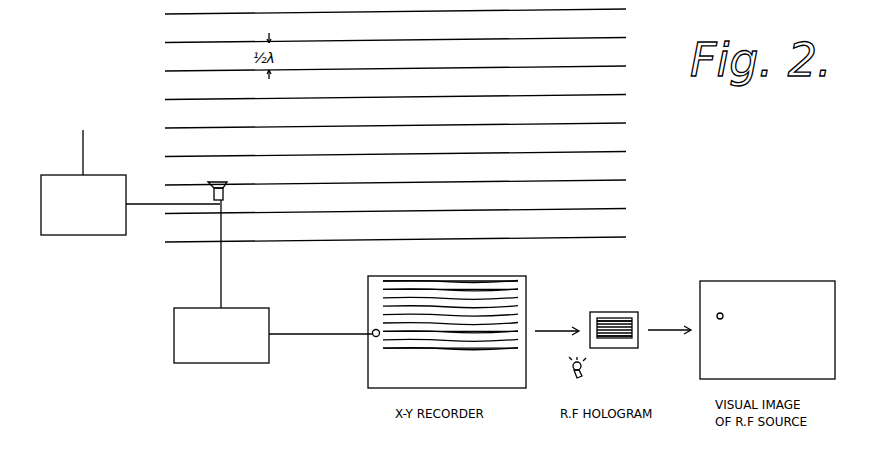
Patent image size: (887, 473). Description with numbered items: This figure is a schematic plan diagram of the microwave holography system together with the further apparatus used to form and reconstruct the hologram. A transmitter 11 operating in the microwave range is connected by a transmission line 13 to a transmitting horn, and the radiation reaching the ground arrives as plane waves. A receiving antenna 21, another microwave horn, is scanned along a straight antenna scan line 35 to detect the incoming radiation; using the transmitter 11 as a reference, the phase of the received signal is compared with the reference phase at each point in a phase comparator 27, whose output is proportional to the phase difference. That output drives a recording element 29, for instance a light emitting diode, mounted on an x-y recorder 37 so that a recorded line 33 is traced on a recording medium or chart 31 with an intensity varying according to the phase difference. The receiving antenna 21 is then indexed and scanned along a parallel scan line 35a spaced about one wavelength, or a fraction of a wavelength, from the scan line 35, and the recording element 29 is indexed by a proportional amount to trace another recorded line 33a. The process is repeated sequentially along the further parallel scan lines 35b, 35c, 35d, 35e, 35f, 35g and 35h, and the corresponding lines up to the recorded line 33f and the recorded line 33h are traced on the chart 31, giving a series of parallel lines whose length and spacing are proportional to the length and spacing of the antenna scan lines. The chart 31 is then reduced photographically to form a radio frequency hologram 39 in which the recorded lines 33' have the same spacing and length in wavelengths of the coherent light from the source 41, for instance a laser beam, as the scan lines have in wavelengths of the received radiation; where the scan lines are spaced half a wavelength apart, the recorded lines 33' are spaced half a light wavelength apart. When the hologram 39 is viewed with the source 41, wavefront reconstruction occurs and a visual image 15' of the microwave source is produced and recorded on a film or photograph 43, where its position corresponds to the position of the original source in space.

The transmitter 11 is at (45, 175).
The transmission line 13 is at (83, 150).
The receiving antenna 21 is at (226, 194).
The phase comparator 27 is at (240, 308).
The recording element 29 is at (371, 331).
The recording medium or chart 31 is at (405, 279).
The recorded line 33 is at (450, 267).
The recorded line 33a is at (495, 290).
The recorded line 33f is at (494, 333).
The recorded line 33h is at (425, 347).
The recorded lines 33' is at (622, 314).
The antenna scan line 35 is at (408, 13).
The antenna scan line 35a is at (436, 38).
The antenna scan line 35b is at (436, 67).
The antenna scan line 35c is at (462, 96).
The antenna scan line 35d is at (478, 125).
The antenna scan line 35e is at (552, 153).
The antenna scan line 35f is at (430, 181).
The antenna scan line 35g is at (508, 207).
The antenna scan line 35h is at (415, 240).
The x-y recorder 37 is at (366, 375).
The radio frequency hologram 39 is at (595, 307).
The coherent light source 41 is at (583, 375).
The film or photograph 43 is at (775, 281).
The visual image 15' is at (733, 305).